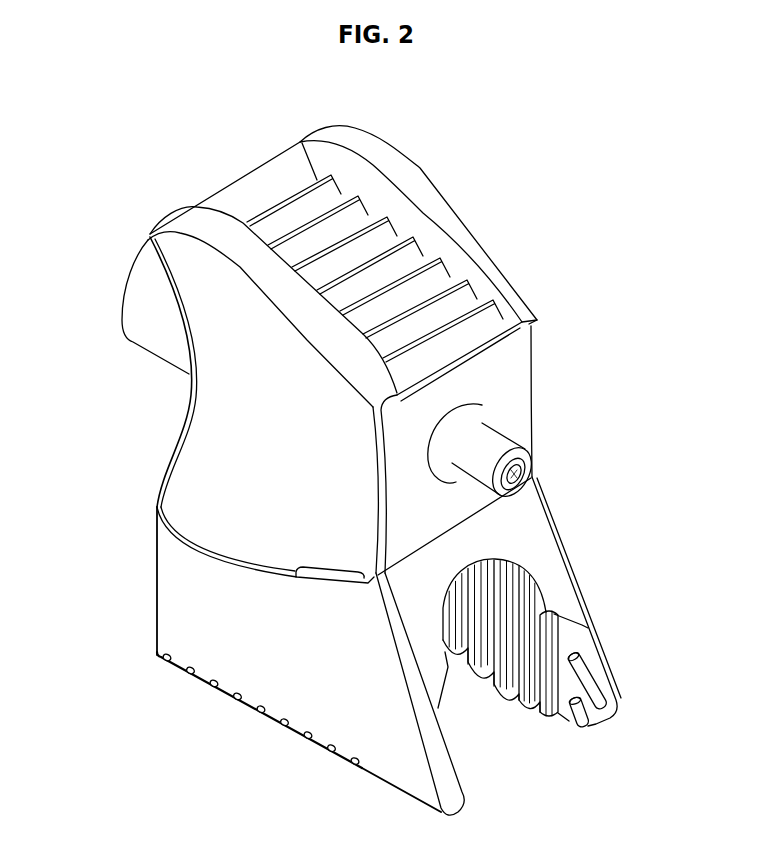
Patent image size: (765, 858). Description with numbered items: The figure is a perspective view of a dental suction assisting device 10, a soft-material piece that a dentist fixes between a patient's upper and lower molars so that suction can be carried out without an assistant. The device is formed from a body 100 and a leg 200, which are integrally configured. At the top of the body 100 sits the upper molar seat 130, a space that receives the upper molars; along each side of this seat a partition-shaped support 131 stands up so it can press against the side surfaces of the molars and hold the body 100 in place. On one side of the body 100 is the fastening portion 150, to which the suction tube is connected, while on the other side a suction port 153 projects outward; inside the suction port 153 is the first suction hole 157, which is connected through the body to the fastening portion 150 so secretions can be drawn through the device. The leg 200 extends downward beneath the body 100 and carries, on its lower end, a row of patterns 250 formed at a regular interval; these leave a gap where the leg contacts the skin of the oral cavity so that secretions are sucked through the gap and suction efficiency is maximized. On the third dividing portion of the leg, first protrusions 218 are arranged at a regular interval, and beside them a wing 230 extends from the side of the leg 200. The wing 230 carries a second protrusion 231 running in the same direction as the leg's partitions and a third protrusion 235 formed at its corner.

The suction assisting device 10 is at (191, 152).
The body 100 is at (187, 460).
The upper molar seat 130 is at (300, 208).
The support 131 is at (400, 210).
The fastening portion 150 is at (153, 335).
The suction port 153 is at (493, 443).
The first suction hole 157 is at (536, 480).
The leg 200 is at (175, 588).
The first protrusions 218 is at (498, 681).
The wing 230 is at (577, 641).
The second protrusion 231 is at (549, 714).
The third protrusion 235 is at (593, 726).
The patterns 250 is at (313, 745).